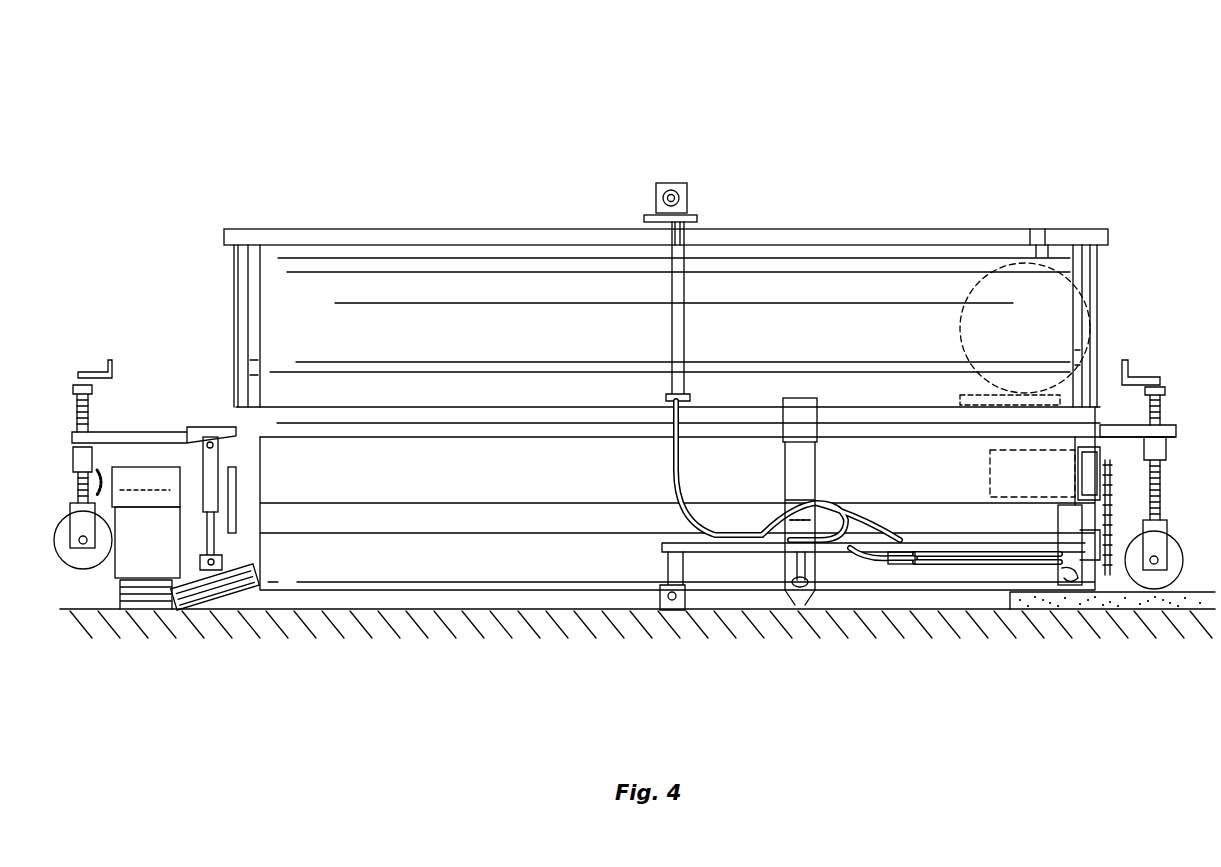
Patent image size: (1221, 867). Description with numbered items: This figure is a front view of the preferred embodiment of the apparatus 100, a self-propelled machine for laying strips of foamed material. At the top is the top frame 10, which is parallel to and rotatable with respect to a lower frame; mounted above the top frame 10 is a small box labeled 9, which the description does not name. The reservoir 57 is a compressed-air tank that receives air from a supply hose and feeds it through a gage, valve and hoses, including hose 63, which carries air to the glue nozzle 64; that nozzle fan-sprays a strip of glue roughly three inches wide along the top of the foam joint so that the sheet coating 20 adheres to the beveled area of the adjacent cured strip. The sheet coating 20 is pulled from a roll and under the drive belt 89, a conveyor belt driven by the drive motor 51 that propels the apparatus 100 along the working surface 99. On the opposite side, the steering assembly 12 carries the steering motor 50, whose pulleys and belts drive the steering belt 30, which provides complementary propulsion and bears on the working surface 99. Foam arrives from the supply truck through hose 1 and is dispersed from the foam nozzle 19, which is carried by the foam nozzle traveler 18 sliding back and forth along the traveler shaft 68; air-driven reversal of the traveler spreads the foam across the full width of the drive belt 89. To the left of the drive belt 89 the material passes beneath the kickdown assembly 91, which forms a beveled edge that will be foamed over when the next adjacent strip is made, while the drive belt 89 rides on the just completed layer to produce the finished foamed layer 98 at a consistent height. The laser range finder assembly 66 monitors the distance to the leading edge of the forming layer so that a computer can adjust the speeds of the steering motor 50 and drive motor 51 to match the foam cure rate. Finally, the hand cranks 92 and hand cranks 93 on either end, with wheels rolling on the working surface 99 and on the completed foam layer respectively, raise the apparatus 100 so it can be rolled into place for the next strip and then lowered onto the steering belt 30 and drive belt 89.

The apparatus 100 is at (431, 141).
The sensor 9 is at (680, 183).
The top frame 10 is at (820, 229).
The sheet coating 20 is at (340, 660).
The hose 63 is at (690, 345).
The reservoir 57 is at (962, 330).
The hand cranks 92 is at (98, 370).
The hand cranks 93 is at (1140, 372).
The steering motor 50 is at (130, 428).
The traveler shaft 68 is at (497, 437).
The hose 1 is at (670, 455).
The foam nozzle traveler 18 is at (817, 470).
The drive motor 51 is at (990, 470).
The steering assembly 12 is at (138, 538).
The drive belt 89 is at (677, 498).
The steering belt 30 is at (112, 600).
The kickdown assembly 91 is at (240, 600).
The working surface 99 is at (480, 615).
The laser range finder assembly 66 is at (690, 600).
The foam nozzle 19 is at (812, 595).
The glue nozzle 64 is at (1060, 580).
The finished foamed layer 98 is at (1195, 605).